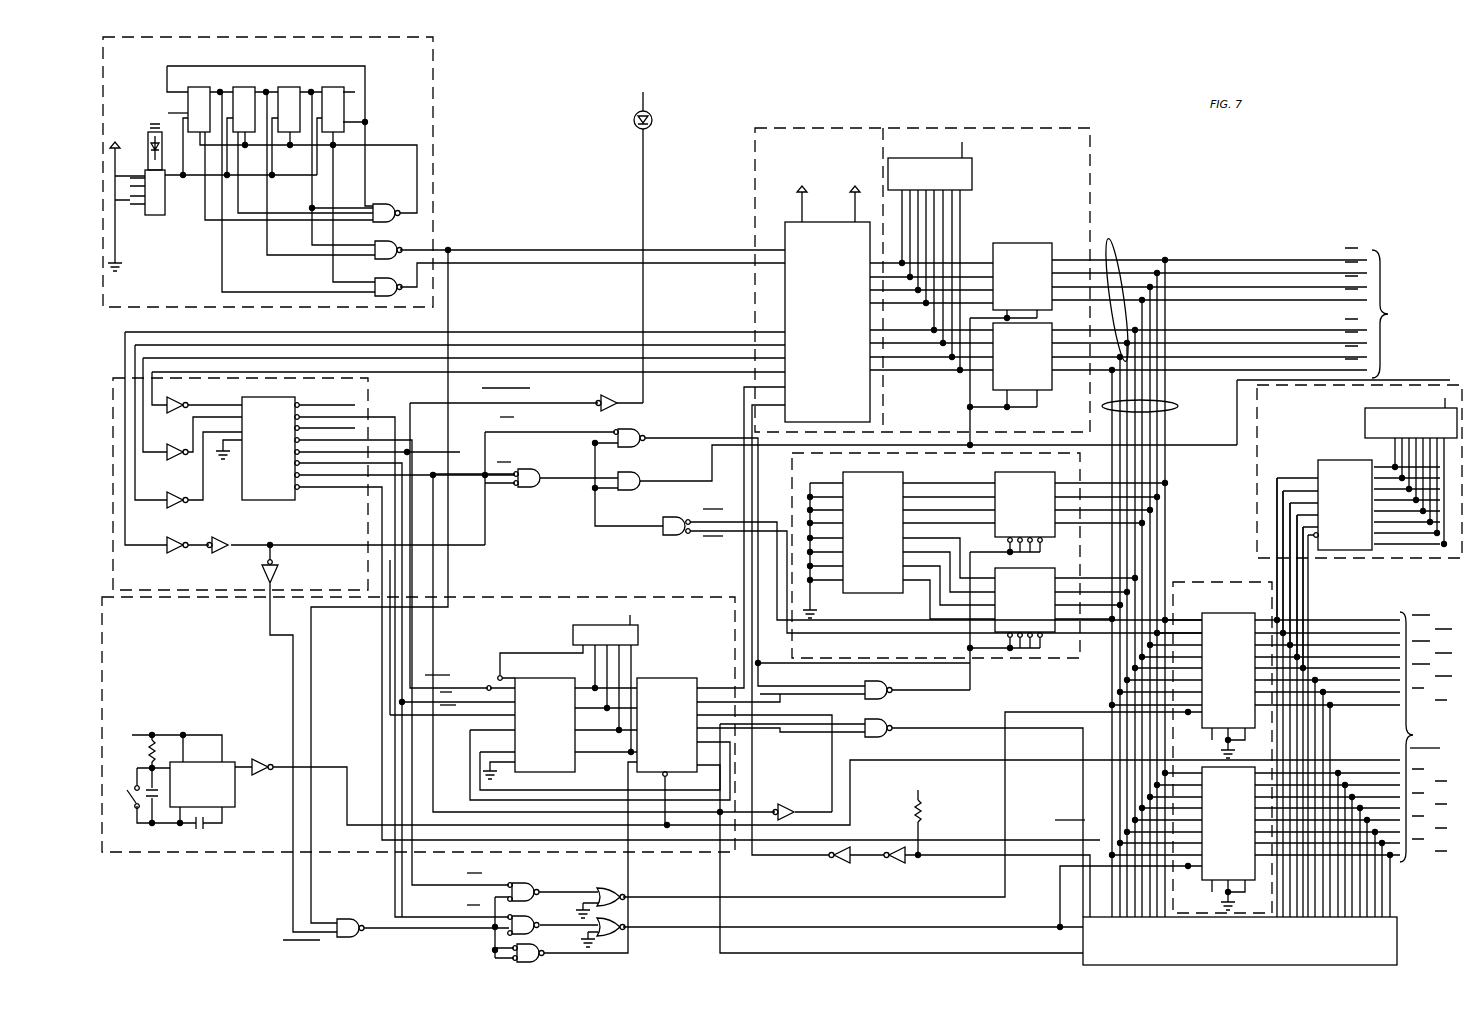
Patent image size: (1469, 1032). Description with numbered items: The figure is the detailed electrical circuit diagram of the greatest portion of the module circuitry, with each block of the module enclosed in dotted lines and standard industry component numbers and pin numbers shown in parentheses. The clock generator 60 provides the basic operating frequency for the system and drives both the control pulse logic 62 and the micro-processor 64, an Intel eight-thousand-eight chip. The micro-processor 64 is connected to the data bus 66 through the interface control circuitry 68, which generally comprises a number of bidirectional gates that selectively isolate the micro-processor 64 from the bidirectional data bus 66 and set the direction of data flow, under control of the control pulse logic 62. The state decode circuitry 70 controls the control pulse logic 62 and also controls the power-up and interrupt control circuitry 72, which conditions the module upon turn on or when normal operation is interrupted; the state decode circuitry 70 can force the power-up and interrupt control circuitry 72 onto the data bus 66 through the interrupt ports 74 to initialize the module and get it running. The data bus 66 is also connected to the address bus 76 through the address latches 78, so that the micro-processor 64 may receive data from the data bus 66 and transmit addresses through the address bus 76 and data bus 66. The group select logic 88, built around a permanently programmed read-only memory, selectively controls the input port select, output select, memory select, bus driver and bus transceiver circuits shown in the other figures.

The clock generator 60 is at (412, 71).
The control pulse logic circuit 62 is at (578, 566).
The micro-processor 64 is at (783, 169).
The data bus 66 is at (1185, 403).
The interface control circuit 68 is at (1038, 206).
The state decode circuit 70 is at (233, 583).
The power up and interrupt control circuitry 72 is at (227, 659).
The interrupt port 74 is at (882, 657).
The address bus 76 is at (1386, 734).
The address latches 78 is at (1191, 747).
The group select logic circuit 88 is at (1295, 460).